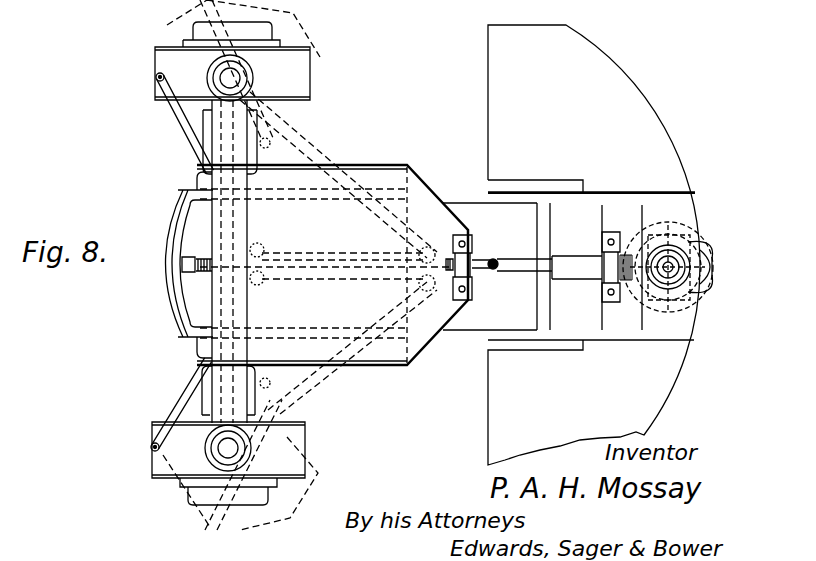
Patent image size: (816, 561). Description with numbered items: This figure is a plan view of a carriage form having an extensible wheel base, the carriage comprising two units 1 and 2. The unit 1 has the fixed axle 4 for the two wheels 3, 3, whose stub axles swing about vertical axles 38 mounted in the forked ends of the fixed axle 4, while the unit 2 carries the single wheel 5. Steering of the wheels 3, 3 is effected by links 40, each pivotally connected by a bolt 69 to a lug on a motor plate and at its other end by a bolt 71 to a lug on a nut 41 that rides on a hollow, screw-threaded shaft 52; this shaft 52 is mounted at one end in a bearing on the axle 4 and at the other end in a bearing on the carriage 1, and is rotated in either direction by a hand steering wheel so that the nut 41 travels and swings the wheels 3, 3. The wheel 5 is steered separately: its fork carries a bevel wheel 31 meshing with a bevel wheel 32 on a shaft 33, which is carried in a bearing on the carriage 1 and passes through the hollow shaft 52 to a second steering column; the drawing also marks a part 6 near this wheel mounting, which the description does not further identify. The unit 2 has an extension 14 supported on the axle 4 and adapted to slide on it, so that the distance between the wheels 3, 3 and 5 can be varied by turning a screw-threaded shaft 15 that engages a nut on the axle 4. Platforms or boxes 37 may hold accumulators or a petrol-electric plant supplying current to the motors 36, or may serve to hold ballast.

The carriage unit 1 is at (366, 167).
The carriage unit 2 is at (463, 333).
The wheel 3 is at (292, 88).
The fixed axle 4 is at (215, 234).
The wheel 5 is at (710, 250).
The pivot 6 is at (677, 247).
The extension 14 is at (450, 200).
The screw-threaded shaft 15 is at (487, 267).
The bevel wheel 31 is at (712, 265).
The bevel wheel 32 is at (622, 252).
The shaft 33 is at (523, 262).
The motor 36 is at (258, 163).
The platform or box 37 is at (594, 245).
The vertical axle 38 is at (232, 78).
The link 40 is at (360, 207).
The nut 41 is at (270, 258).
The hollow screw-threaded shaft 52 is at (325, 266).
The bolt 69 is at (157, 79).
The bolt 71 is at (262, 283).